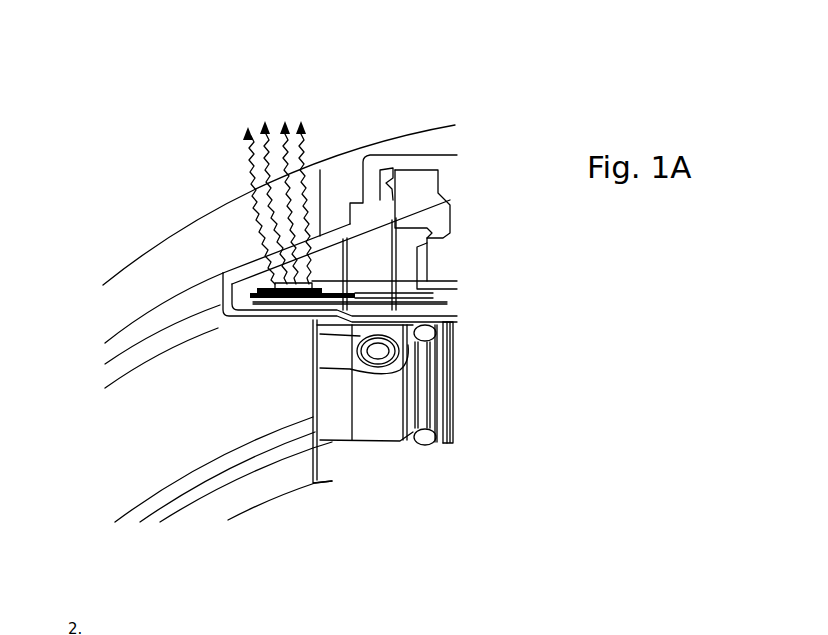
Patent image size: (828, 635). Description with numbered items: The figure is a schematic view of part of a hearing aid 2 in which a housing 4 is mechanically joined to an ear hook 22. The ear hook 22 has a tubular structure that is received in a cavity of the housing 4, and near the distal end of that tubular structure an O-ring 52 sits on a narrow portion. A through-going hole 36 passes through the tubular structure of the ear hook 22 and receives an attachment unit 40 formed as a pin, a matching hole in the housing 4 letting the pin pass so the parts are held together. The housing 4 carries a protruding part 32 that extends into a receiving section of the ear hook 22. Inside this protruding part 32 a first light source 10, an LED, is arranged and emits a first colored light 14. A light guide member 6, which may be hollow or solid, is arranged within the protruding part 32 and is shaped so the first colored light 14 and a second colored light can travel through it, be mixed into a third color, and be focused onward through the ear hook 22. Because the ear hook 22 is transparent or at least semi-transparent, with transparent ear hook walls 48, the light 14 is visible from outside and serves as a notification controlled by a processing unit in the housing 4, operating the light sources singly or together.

The hearing aid 2 is at (177, 124).
The housing 4 is at (348, 158).
The light guide member 6 is at (256, 205).
The first light source 10 is at (443, 280).
The first colored light 14 is at (278, 140).
The ear hook 22 is at (152, 247).
The protruding part 32 is at (240, 268).
The through-going hole 36 is at (386, 377).
The attachment unit 40 is at (379, 351).
The ear hook walls 48 is at (238, 140).
The O-ring 52 is at (425, 438).